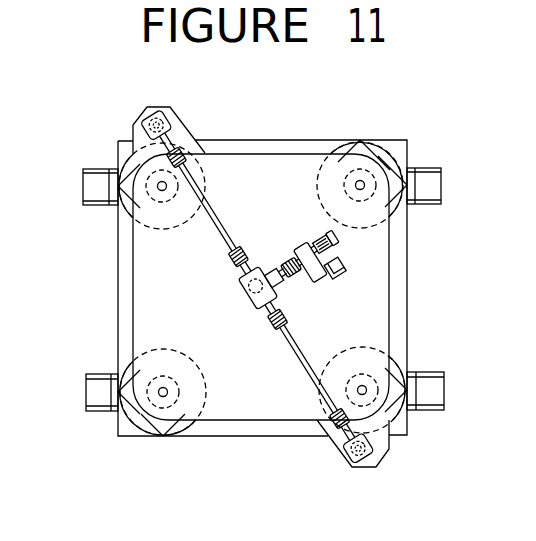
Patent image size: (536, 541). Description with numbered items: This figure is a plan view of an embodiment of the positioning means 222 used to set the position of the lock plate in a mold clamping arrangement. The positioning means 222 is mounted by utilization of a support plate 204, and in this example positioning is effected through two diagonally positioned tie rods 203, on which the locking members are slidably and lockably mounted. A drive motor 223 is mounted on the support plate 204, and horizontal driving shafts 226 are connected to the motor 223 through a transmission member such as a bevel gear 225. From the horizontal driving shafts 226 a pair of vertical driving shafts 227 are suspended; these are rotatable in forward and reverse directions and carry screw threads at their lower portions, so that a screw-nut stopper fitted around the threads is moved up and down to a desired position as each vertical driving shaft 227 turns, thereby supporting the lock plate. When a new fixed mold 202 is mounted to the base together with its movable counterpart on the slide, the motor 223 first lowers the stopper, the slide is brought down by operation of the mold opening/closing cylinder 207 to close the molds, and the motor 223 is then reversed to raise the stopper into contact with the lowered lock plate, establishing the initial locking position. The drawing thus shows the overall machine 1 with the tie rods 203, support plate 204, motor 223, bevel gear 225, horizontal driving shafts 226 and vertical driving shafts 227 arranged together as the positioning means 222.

The frame 1 is at (256, 138).
The fixed mold 202 is at (243, 291).
The tie rod 203 is at (131, 145).
The support plate 204 is at (131, 278).
The mold opening/closing cylinder 207 is at (90, 210).
The positioning means 222 is at (266, 246).
The drive motor 223 is at (336, 270).
The bevel gear 225 is at (188, 120).
The horizontal driving shafts 226 is at (220, 243).
The vertical driving shaft 227 is at (160, 105).